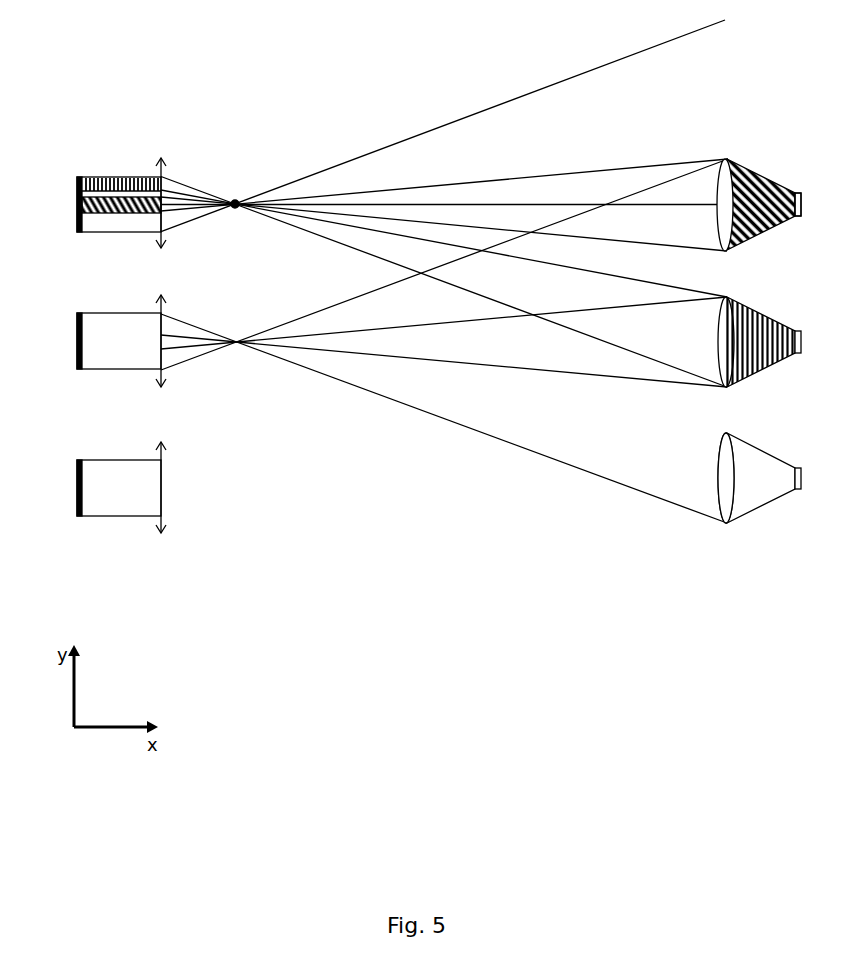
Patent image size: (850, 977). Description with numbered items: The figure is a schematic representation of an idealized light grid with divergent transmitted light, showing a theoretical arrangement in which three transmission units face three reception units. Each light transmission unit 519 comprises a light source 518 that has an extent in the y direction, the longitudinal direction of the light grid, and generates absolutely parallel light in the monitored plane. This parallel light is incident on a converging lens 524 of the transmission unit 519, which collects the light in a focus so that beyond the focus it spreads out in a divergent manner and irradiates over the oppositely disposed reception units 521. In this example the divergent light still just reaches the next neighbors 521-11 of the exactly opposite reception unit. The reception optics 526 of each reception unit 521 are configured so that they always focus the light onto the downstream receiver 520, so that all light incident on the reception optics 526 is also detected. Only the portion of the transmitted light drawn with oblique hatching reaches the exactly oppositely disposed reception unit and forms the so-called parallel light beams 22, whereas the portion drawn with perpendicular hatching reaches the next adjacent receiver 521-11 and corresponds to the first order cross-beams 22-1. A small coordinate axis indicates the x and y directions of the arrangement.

The light source 518 is at (77, 197).
The light transmission unit 519 is at (99, 157).
The converging lens 524 is at (165, 172).
The parallel light beams 22 is at (545, 188).
The first order cross-beams 22-1 is at (398, 256).
The reception optics 526 is at (727, 178).
The reception unit 521 is at (773, 174).
The receiver 520 is at (802, 203).
The next neighbor reception unit 521-11 is at (773, 311).